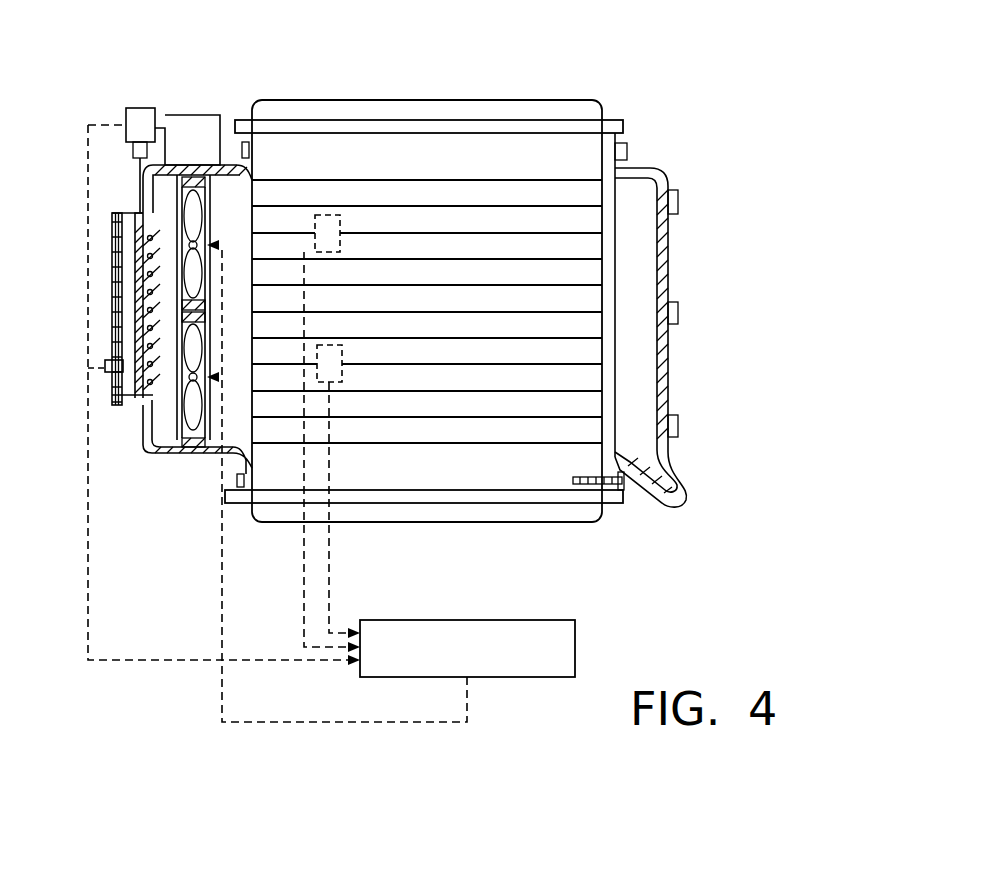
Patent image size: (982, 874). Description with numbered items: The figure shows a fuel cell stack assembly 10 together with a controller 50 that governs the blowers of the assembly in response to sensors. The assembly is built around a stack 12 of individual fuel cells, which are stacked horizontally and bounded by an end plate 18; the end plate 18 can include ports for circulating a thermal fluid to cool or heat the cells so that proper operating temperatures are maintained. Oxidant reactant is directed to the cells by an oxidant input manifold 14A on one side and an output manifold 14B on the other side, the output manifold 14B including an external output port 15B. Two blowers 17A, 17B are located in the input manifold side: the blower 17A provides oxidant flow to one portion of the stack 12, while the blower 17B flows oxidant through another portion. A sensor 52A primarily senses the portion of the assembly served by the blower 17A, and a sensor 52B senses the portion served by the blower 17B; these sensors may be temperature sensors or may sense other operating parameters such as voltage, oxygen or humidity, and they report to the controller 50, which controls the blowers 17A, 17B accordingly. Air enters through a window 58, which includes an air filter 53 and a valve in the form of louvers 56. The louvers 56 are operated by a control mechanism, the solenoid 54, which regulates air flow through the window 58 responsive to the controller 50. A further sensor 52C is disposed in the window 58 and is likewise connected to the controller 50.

The fuel cell stack assembly 10 is at (600, 58).
The stack 12 is at (410, 462).
The oxidant input manifold 14A is at (147, 452).
The output manifold 14B is at (662, 388).
The external output port 15B is at (683, 478).
The blower 17A is at (195, 420).
The blower 17B is at (195, 215).
The end plate 18 is at (453, 108).
The controller 50 is at (495, 620).
The sensor 52A is at (340, 372).
The sensor 52B is at (340, 226).
The sensor 52C is at (108, 366).
The air filter 53 is at (112, 300).
The solenoid 54 is at (128, 118).
The louvers 56 is at (140, 226).
The window 58 is at (88, 245).